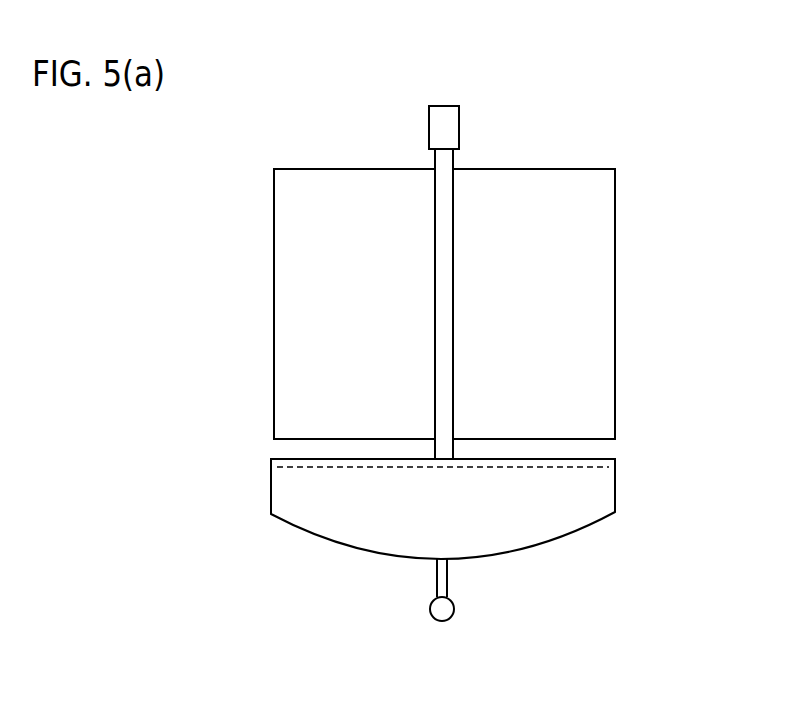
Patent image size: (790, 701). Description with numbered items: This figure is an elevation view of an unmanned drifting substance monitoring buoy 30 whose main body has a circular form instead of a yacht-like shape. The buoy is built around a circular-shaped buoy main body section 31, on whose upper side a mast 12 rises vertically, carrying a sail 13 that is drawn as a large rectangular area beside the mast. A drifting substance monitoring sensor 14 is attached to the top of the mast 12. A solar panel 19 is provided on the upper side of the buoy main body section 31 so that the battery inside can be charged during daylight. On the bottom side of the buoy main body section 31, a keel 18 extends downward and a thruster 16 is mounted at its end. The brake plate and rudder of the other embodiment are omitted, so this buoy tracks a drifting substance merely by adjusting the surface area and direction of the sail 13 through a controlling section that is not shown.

The unmanned drifting substance monitoring buoy 30 is at (667, 205).
The sail 13 is at (613, 300).
The mast 12 is at (451, 225).
The drifting substance monitoring sensor 14 is at (457, 125).
The circular-shaped buoy main body section 31 is at (613, 493).
The solar panel 19 is at (595, 452).
The keel 18 is at (446, 580).
The thruster 16 is at (441, 612).